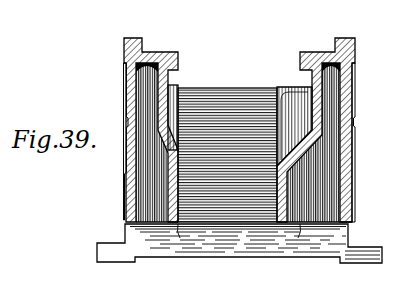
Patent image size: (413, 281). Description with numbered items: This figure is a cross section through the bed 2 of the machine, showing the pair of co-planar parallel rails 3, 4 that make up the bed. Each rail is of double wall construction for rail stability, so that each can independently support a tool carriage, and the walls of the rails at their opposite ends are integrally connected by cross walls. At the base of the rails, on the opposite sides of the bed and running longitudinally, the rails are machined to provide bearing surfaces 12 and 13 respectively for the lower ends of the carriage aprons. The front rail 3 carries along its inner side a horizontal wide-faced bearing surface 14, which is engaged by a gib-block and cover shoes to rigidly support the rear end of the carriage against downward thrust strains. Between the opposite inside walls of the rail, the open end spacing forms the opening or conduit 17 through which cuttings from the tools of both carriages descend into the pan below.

The bed 2 is at (124, 190).
The front rail 3 is at (329, 52).
The rail 4 is at (150, 51).
The bearing surface 12 is at (355, 198).
The bearing surface 13 is at (123, 176).
The horizontal wide-faced bearing surface 14 is at (290, 87).
The opening or conduit 17 is at (230, 143).